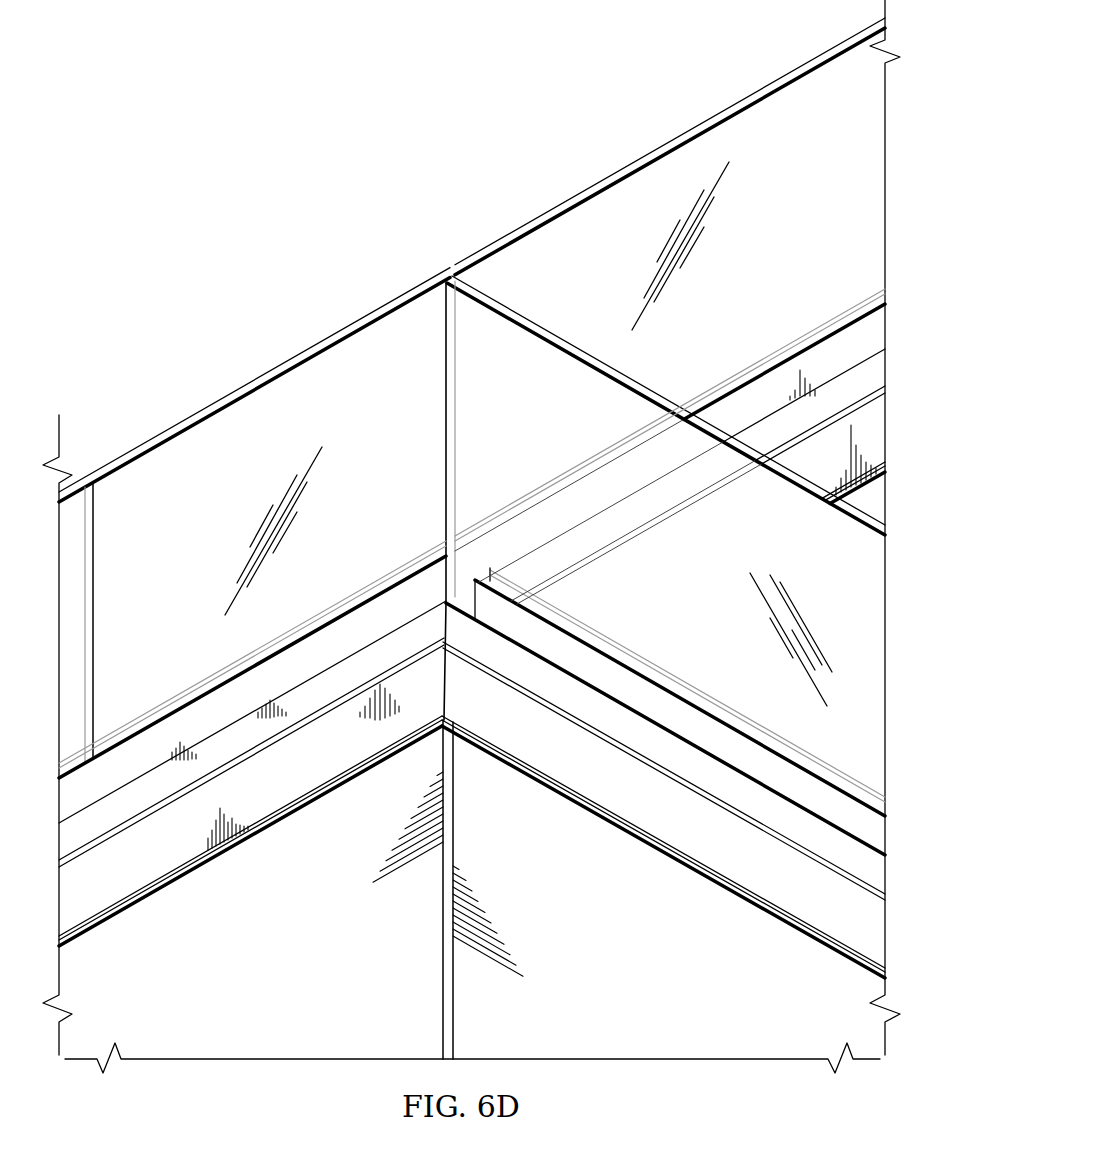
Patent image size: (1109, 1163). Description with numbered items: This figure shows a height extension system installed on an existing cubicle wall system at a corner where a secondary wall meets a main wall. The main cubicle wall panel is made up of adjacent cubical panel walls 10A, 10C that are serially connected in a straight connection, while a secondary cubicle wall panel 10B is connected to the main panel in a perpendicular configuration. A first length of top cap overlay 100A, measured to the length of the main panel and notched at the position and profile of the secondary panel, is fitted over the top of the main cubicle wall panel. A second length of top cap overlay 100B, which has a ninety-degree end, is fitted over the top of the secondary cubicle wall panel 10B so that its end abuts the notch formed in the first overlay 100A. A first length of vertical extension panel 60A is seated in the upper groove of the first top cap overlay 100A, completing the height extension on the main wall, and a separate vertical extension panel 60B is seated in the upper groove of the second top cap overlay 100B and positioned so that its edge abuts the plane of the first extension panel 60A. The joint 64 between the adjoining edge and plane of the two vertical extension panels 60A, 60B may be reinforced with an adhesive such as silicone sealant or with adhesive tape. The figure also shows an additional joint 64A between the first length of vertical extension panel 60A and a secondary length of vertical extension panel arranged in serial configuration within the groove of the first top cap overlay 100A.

The cubical panel wall 10A is at (352, 797).
The secondary cubicle wall panel 10B is at (552, 810).
The cubical panel wall 10C is at (877, 497).
The first length of vertical extension panel 60A is at (233, 400).
The separate vertical extension panel 60B is at (661, 405).
The joint 64 is at (445, 445).
The additional joint 64A is at (94, 623).
The first length of top cap overlay 100A is at (306, 808).
The second length of top cap overlay 100B is at (597, 822).